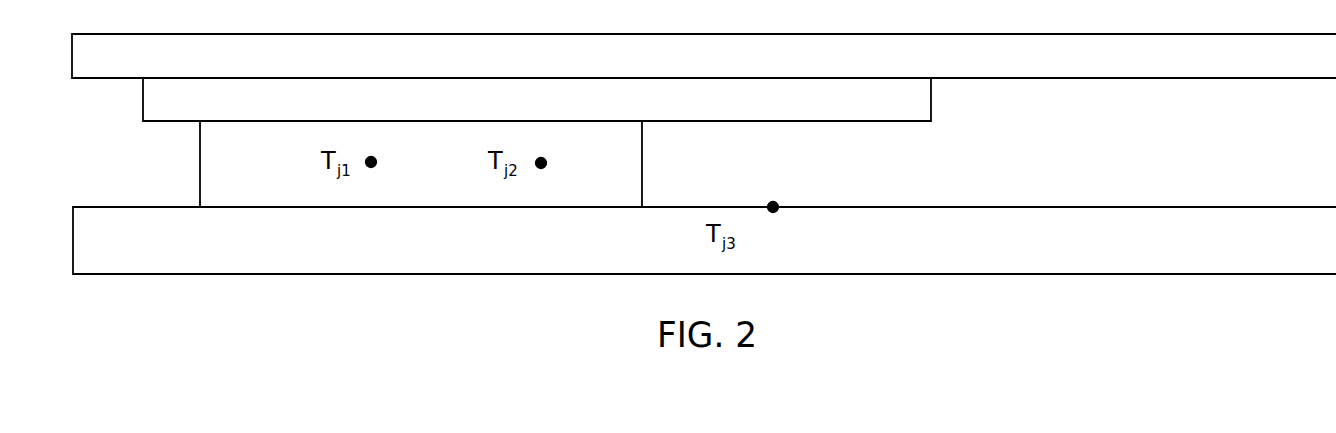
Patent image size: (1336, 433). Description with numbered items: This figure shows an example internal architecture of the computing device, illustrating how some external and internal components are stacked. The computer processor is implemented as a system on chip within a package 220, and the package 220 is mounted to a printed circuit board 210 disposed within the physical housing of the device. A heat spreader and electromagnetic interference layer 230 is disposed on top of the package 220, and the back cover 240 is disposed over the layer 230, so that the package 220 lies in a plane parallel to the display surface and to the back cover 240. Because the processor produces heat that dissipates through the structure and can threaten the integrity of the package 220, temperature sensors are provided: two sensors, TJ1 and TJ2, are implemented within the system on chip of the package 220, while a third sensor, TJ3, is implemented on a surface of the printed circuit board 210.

The back cover 240 is at (735, 69).
The heat spreader and electromagnetic interference (EMI) layer 230 is at (561, 111).
The package 220 is at (267, 191).
The printed circuit board 210 is at (1300, 254).